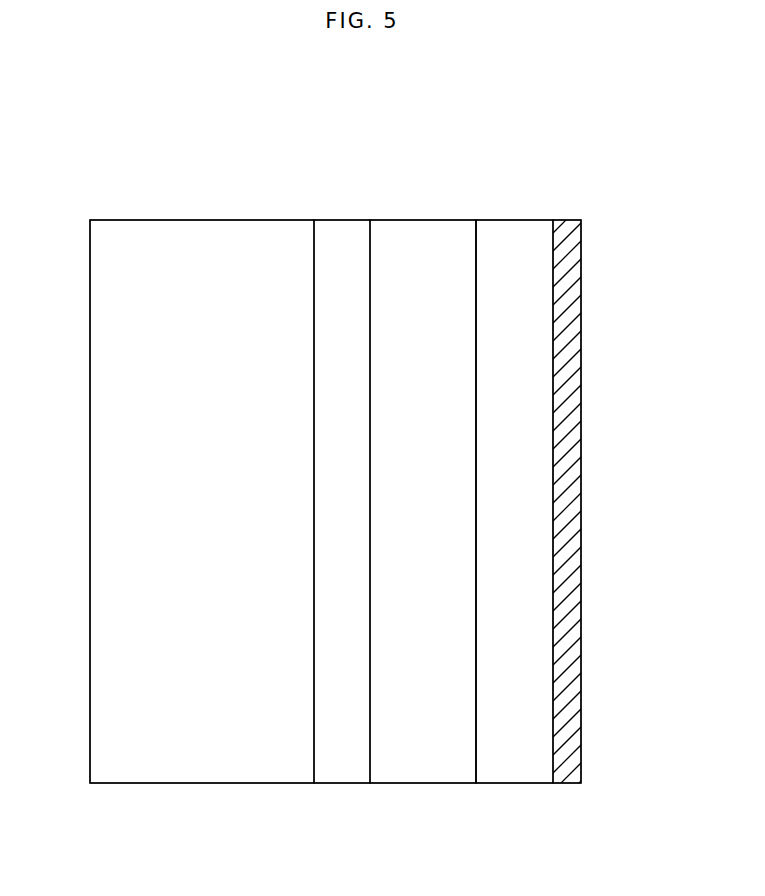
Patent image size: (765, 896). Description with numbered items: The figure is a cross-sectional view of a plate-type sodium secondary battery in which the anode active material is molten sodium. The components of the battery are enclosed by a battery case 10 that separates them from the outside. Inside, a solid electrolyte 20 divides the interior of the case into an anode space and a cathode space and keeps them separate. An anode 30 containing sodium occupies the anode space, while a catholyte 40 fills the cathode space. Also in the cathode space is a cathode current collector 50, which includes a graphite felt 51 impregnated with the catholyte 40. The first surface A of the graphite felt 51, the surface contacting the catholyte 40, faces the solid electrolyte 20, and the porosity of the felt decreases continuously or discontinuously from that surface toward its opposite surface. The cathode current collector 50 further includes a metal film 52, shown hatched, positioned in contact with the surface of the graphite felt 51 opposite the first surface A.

The battery case 10 is at (202, 783).
The solid electrolyte 20 is at (346, 228).
The anode 30 is at (227, 228).
The catholyte 40 is at (408, 228).
The cathode current collector 50 is at (554, 450).
The graphite felt 51 is at (513, 228).
The metal film 52 is at (533, 129).
The first surface A is at (476, 765).